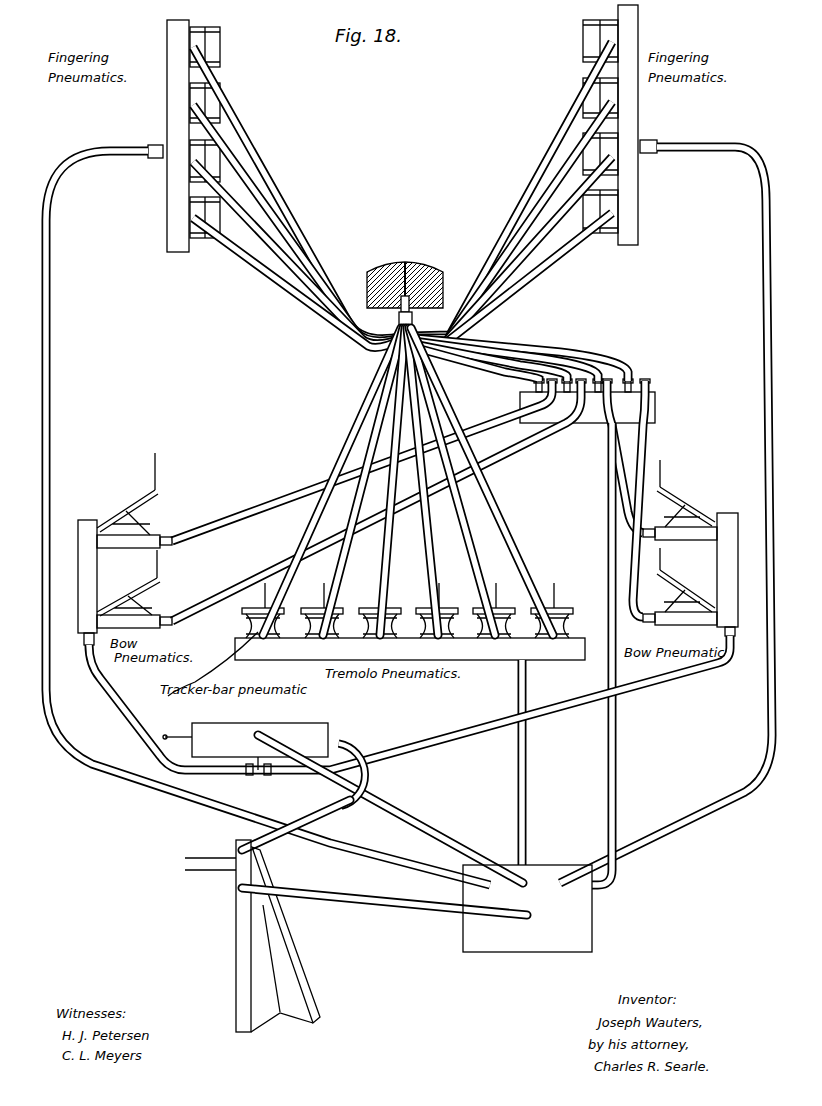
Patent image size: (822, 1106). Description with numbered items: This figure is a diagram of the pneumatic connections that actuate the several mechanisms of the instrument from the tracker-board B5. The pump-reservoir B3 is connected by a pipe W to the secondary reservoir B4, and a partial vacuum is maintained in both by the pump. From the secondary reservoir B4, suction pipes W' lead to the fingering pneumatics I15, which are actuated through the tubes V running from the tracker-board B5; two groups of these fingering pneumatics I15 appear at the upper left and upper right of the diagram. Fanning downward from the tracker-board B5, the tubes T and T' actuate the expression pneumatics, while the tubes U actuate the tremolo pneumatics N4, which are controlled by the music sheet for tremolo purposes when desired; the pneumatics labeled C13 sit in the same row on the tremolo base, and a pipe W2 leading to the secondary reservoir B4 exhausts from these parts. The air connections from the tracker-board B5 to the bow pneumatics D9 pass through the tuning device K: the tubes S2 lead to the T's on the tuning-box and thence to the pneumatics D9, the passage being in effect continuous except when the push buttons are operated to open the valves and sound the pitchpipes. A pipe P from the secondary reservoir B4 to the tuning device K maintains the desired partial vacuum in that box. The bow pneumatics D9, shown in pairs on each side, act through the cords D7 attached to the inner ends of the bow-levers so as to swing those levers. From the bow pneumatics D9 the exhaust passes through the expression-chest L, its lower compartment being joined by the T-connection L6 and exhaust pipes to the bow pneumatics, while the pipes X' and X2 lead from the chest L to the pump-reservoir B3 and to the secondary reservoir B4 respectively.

The fingering pneumatics I15 is at (222, 58).
The tubes V is at (304, 180).
The tracker-board B5 is at (410, 268).
The tubes S2 is at (508, 360).
The tuning device K is at (585, 425).
The pipe P is at (606, 512).
The cords D7 is at (154, 463).
The bow pneumatics D9 is at (146, 498).
The tracker-board tube T is at (333, 481).
The tracker-board tube T' is at (396, 481).
The tubes U is at (452, 481).
The tremolo pneumatics N4 is at (322, 608).
The tremolo pneumatic bellows C13 is at (248, 616).
The pipe W2 is at (528, 760).
The expression-chest L is at (258, 719).
The T-connection L6 is at (258, 776).
The pipe X' is at (303, 797).
The pipe X2 is at (404, 822).
The pipe W is at (384, 907).
The suction pipes W' is at (409, 512).
The pump-reservoir B3 is at (236, 930).
The secondary reservoir B4 is at (592, 930).